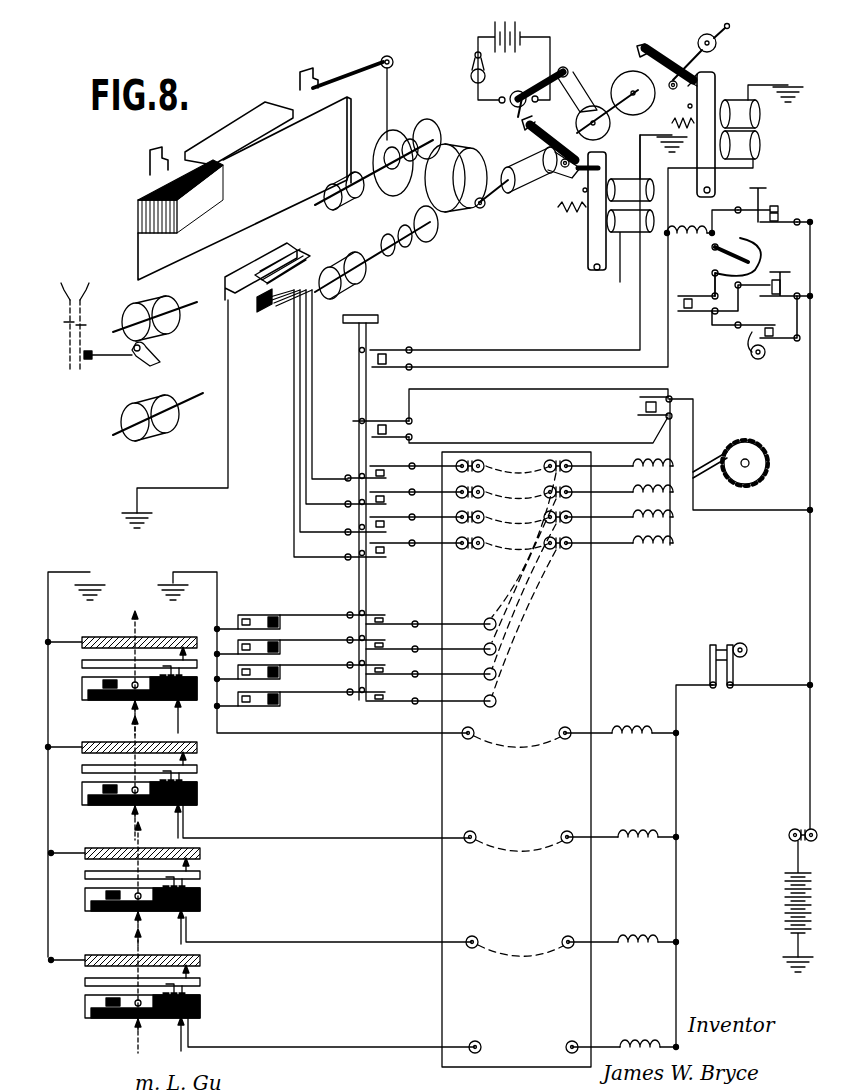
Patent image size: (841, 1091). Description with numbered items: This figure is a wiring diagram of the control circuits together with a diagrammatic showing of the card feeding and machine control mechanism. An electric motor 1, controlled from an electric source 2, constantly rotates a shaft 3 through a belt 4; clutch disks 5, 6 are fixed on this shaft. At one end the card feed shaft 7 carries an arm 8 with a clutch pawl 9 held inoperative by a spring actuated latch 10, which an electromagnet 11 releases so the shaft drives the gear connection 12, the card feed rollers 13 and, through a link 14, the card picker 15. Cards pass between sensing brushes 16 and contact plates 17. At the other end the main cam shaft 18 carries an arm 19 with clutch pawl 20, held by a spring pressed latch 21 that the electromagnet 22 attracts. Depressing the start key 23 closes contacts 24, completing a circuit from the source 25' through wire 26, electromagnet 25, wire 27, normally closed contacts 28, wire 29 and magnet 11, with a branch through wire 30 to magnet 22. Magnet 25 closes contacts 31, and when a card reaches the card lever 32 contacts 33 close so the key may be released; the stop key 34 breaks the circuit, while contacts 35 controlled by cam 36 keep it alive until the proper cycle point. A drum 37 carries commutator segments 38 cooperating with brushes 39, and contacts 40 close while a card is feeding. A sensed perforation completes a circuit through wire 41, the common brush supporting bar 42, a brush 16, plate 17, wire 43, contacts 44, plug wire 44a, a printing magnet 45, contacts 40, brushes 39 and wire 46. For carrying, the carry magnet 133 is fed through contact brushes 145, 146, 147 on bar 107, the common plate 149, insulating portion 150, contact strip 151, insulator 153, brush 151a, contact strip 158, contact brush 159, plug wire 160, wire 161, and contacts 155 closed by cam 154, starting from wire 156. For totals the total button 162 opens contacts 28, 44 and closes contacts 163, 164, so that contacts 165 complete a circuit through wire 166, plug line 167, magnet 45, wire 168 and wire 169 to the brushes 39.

The electric motor 1 is at (500, 108).
The electric source 2 is at (522, 28).
The shaft 3 is at (600, 108).
The belt 4 is at (578, 78).
The clutch disk 5 is at (515, 160).
The clutch disk 6 is at (622, 80).
The card feed shaft 7 is at (505, 190).
The arm 8 is at (548, 180).
The clutch pawl 9 is at (540, 140).
The spring actuated latch 10 is at (588, 236).
The electromagnet 11 is at (620, 268).
The gear connection 12 is at (428, 200).
The card feed rollers 13 is at (164, 295).
The link 14 is at (392, 97).
The card picker 15 is at (236, 130).
The sensing brushes 16 is at (285, 272).
The electric contact plates 17 is at (275, 300).
The main cam shaft 18 is at (733, 30).
The arm 19 is at (660, 92).
The clutch pawl 20 is at (653, 50).
The spring pressed latch 21 is at (717, 80).
The electromagnet 22 is at (758, 110).
The start key 23 is at (762, 186).
The contacts 24 is at (770, 216).
The electromagnet 25 is at (690, 218).
The electric source 25' is at (766, 897).
The wire 26 is at (810, 575).
The wire 27 is at (668, 270).
The contacts 28 is at (384, 352).
The wire 29 is at (543, 350).
The wire 30 is at (668, 197).
The contacts 31 is at (742, 248).
The card lever 32 is at (156, 360).
The contacts 33 is at (62, 356).
The stop key 34 is at (782, 272).
The contacts 35 is at (758, 330).
The cam 36 is at (766, 353).
The disk or drum 37 is at (700, 34).
The commutator segments 38 is at (762, 452).
The brushes 39 is at (712, 485).
The contacts 40 is at (640, 400).
The wire 41 is at (230, 446).
The common brush supporting bar 42 is at (233, 280).
The wire 43 is at (313, 388).
The electric contacts 44 is at (370, 480).
The plug wire 44a is at (492, 474).
The printing magnet 45 is at (636, 466).
The wire 46 is at (749, 517).
The bar 107 is at (200, 980).
The carry magnet 133 is at (650, 736).
The contact brush 145 is at (195, 637).
The contact brush 146 is at (168, 878).
The contact brush 147 is at (190, 862).
The common plate 149 is at (140, 638).
The insulating portion 150 is at (202, 894).
The contact strip 151 is at (120, 695).
The brush 151a is at (138, 820).
The insulator 153 is at (95, 898).
The cam 154 is at (737, 643).
The contacts 155 is at (712, 650).
The wire 156 is at (50, 622).
The contact strip 158 is at (84, 794).
The contact brush 159 is at (186, 820).
The plug wire 160 is at (505, 940).
The wire 161 is at (676, 776).
The total button 162 is at (350, 323).
The contacts 163 is at (412, 426).
The contacts 164 is at (382, 620).
The contacts 165 is at (248, 617).
The wire 166 is at (205, 572).
The plug line 167 is at (500, 580).
The wire 168 is at (480, 448).
The wire 169 is at (475, 395).